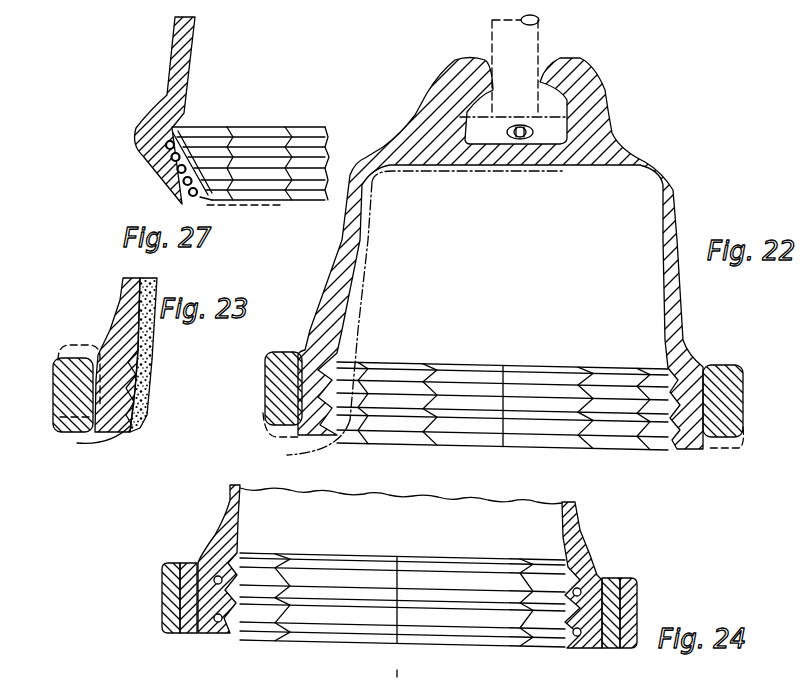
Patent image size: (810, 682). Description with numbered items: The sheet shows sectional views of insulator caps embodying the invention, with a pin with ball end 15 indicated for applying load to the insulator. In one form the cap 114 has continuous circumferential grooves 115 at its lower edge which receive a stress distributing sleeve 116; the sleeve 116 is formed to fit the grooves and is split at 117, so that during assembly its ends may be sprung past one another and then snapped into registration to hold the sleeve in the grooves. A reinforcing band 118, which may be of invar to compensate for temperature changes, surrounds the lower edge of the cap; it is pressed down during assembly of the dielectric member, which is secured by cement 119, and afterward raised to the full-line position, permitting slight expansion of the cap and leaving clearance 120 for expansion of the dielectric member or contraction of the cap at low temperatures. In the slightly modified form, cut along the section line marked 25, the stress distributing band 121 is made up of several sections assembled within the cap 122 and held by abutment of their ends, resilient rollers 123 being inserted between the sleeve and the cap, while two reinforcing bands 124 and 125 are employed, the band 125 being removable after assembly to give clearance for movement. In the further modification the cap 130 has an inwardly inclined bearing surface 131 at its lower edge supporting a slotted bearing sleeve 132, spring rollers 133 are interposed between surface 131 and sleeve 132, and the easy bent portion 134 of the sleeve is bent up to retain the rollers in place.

In FIG. 22, the pin with ball end 15 is at (267, 390).
In FIG. 22, the cap 114 is at (677, 307).
In FIG. 22, the continuous circumferential grooves 115 is at (703, 363).
In FIG. 22, the stress distributing sleeve 116 is at (445, 385).
In FIG. 22, the split of the sleeve 117 is at (527, 387).
In FIG. 23, the reinforcing band 118 is at (77, 357).
In FIG. 23, the cement 119 is at (143, 345).
In FIG. 22, the clearance 120 is at (317, 353).
In FIG. 24, the stress distributing band 121 is at (460, 582).
In FIG. 24, the cap 122 is at (575, 507).
In FIG. 24, the resilient rollers 123 is at (577, 590).
In FIG. 24, the reinforcing band 124 is at (600, 580).
In FIG. 24, the reinforcing band 125 is at (632, 605).
In FIG. 24, the section line 25 is at (138, 620).
In FIG. 27, the cap 130 is at (177, 76).
In FIG. 27, the inwardly inclined bearing surface 131 is at (187, 173).
In FIG. 27, the bearing sleeve 132 is at (260, 147).
In FIG. 27, the spring rollers 133 is at (176, 177).
In FIG. 27, the easy bent portion 134 is at (200, 197).